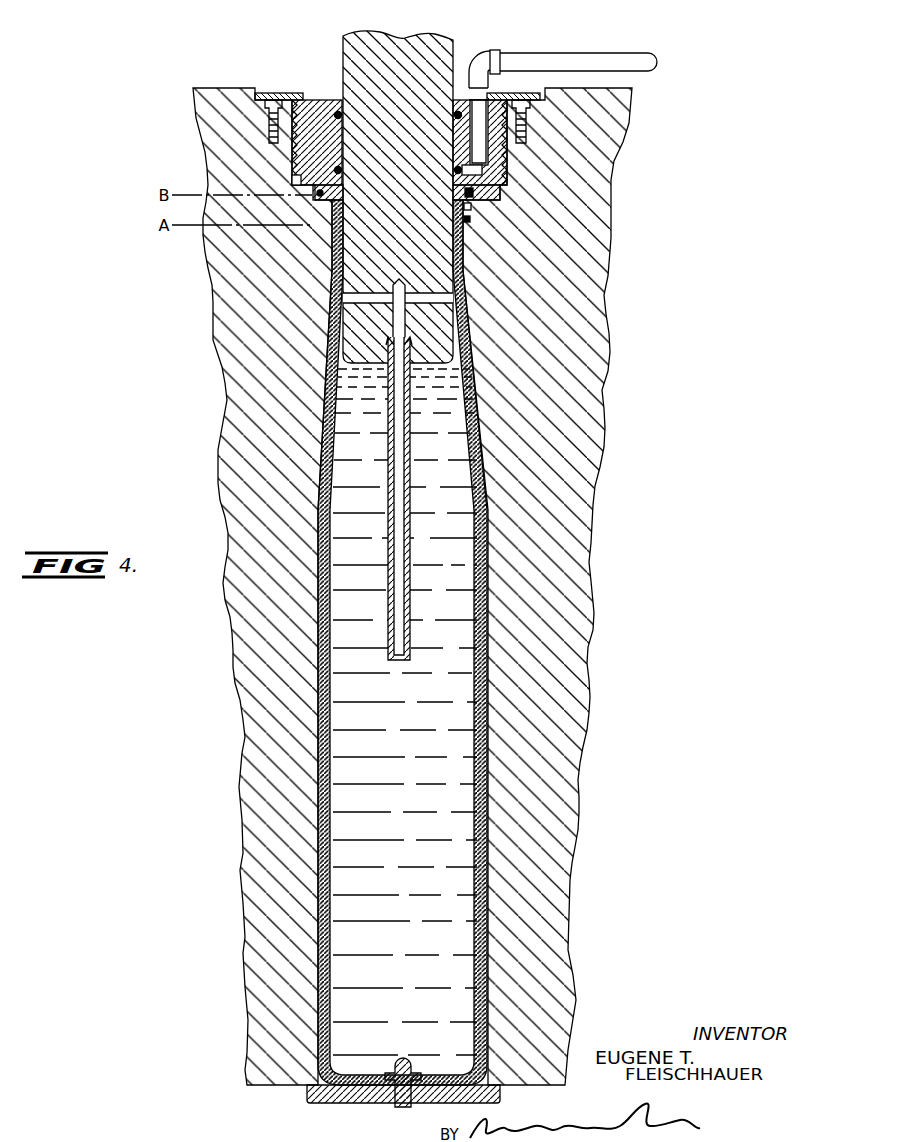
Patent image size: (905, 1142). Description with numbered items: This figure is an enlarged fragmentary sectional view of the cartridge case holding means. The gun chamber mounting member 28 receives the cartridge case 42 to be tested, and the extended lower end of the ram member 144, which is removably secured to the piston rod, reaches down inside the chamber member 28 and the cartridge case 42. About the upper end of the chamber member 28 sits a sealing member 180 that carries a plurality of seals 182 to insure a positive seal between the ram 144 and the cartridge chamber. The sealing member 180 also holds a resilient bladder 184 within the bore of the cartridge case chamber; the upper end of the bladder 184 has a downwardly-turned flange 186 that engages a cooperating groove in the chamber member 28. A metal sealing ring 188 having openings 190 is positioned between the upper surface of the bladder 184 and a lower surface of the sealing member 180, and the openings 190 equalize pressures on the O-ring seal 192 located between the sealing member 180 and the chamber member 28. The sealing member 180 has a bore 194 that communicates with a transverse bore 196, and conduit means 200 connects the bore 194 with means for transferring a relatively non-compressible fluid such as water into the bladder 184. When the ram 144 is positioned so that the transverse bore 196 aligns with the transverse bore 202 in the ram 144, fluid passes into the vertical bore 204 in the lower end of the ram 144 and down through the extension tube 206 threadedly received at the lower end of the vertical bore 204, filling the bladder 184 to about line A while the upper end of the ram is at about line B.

The gun chamber mounting member 28 is at (575, 765).
The cartridge case 42 is at (486, 946).
The ram member 144 is at (423, 46).
The sealing member 180 is at (305, 116).
The seals 182 is at (337, 111).
The resilient bladder 184 is at (470, 222).
The downwardly-turned flange 186 is at (471, 207).
The metal sealing ring 188 is at (490, 197).
The openings 190 is at (490, 177).
The O-ring seal 192 is at (298, 186).
The bore 194 is at (503, 133).
The transverse bore 196 is at (488, 143).
The conduit means 200 is at (515, 56).
The transverse bore 202 is at (421, 296).
The vertical bore 204 is at (398, 318).
The extension tube 206 is at (406, 527).